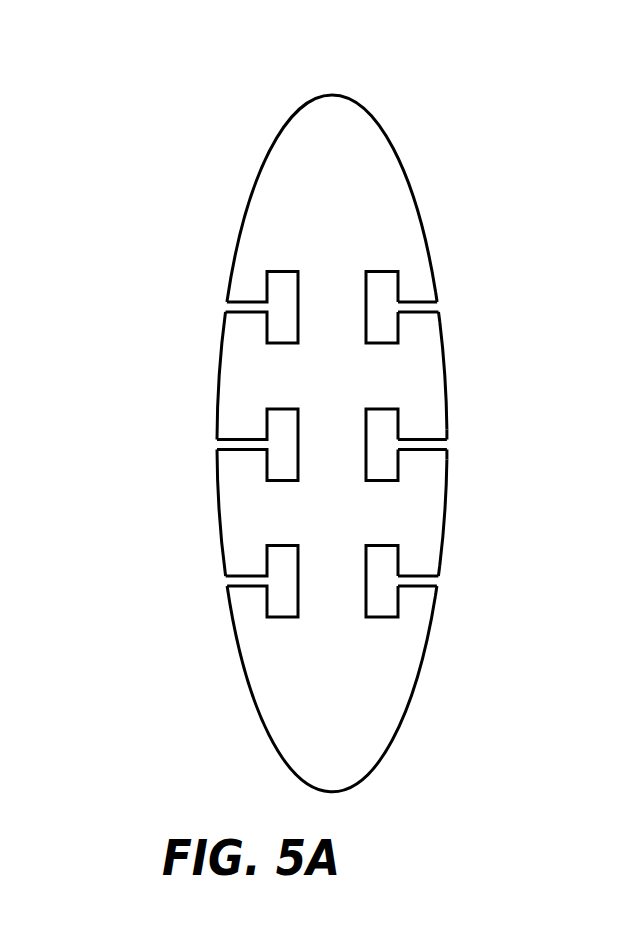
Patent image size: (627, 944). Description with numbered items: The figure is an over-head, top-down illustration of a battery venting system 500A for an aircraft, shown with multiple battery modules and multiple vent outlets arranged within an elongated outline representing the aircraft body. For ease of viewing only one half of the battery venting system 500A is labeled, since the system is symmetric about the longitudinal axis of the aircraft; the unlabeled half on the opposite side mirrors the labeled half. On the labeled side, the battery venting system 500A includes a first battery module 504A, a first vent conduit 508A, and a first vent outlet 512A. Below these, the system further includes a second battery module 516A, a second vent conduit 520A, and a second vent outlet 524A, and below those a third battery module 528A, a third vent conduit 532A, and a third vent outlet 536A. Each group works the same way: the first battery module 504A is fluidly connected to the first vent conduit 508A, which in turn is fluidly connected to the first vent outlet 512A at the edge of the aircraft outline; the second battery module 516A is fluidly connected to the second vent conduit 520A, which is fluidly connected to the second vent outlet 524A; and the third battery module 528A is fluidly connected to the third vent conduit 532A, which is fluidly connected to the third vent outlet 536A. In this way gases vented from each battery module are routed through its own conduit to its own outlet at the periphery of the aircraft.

The battery venting system 500A is at (324, 425).
The first battery module 504A is at (386, 270).
The first vent conduit 508A is at (412, 301).
The first vent outlet 512A is at (455, 307).
The second battery module 516A is at (398, 421).
The second vent conduit 520A is at (425, 463).
The second vent outlet 524A is at (461, 443).
The third battery module 528A is at (392, 545).
The third vent conduit 532A is at (460, 580).
The third vent outlet 536A is at (433, 587).